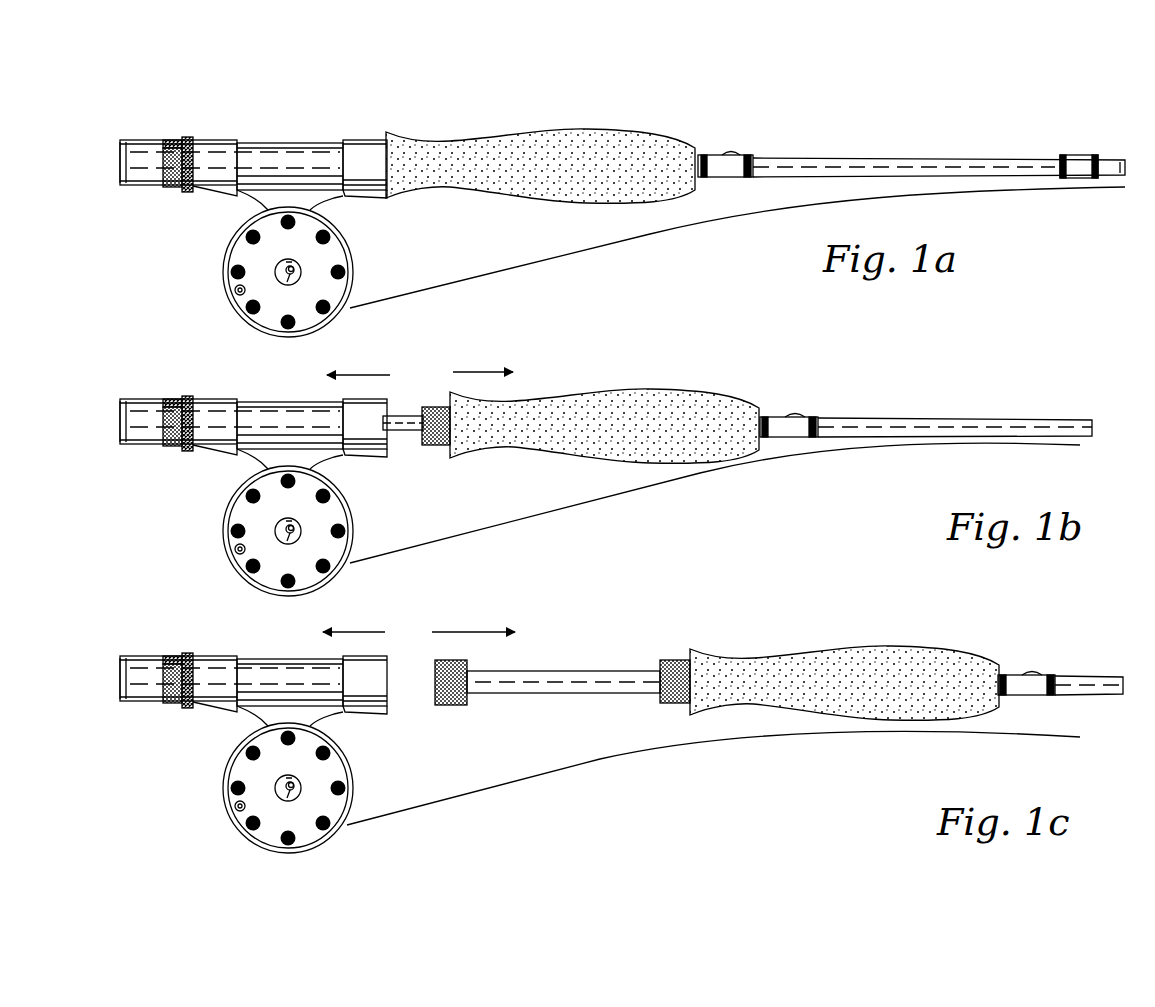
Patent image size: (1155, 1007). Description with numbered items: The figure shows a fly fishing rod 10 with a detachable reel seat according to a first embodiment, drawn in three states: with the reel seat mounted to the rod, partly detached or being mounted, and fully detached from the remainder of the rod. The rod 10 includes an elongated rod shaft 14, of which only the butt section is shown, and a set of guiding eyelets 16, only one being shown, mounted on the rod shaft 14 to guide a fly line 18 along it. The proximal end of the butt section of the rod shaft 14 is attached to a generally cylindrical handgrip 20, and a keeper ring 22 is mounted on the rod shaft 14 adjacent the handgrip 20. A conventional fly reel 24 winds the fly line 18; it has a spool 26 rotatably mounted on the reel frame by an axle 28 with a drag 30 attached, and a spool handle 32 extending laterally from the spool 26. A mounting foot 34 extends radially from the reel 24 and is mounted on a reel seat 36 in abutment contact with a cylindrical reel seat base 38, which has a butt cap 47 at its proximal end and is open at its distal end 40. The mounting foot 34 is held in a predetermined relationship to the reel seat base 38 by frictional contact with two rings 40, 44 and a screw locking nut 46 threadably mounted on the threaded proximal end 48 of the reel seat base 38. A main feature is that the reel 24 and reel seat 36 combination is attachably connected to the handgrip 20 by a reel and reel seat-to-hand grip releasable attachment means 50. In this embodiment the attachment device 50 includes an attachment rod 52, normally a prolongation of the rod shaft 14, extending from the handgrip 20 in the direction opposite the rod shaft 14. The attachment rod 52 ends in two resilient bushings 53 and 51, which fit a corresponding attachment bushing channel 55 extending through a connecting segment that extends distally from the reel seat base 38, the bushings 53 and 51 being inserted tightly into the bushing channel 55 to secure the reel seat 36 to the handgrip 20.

In FIG. 1A, the fly fishing rod 10 is at (911, 139).
In FIG. 1B, the fly fishing rod 10 is at (926, 363).
In FIG. 1C, the fly fishing rod 10 is at (1049, 649).
In FIG. 1A, the rod shaft 14 is at (848, 158).
In FIG. 1B, the rod shaft 14 is at (875, 418).
In FIG. 1C, the rod shaft 14 is at (1090, 678).
In FIG. 1A, the guiding eyelets 16 is at (1080, 179).
In FIG. 1A, the fly line 18 is at (765, 213).
In FIG. 1B, the fly line 18 is at (650, 490).
In FIG. 1C, the fly line 18 is at (633, 750).
In FIG. 1A, the handgrip 20 is at (478, 148).
In FIG. 1B, the handgrip 20 is at (655, 410).
In FIG. 1C, the handgrip 20 is at (840, 668).
In FIG. 1A, the keeper ring 22 is at (725, 155).
In FIG. 1B, the keeper ring 22 is at (790, 417).
In FIG. 1C, the keeper ring 22 is at (1025, 676).
In FIG. 1A, the fly reel 24 is at (283, 277).
In FIG. 1B, the fly reel 24 is at (284, 535).
In FIG. 1C, the fly reel 24 is at (276, 801).
In FIG. 1A, the spool 26 is at (352, 292).
In FIG. 1B, the spool 26 is at (328, 531).
In FIG. 1C, the spool 26 is at (314, 794).
In FIG. 1A, the axle 28 is at (297, 268).
In FIG. 1B, the axle 28 is at (340, 502).
In FIG. 1C, the axle 28 is at (340, 759).
In FIG. 1A, the drag 30 is at (276, 272).
In FIG. 1B, the drag 30 is at (243, 527).
In FIG. 1C, the drag 30 is at (242, 785).
In FIG. 1A, the spool handle 32 is at (239, 295).
In FIG. 1B, the spool handle 32 is at (221, 574).
In FIG. 1C, the spool handle 32 is at (229, 840).
In FIG. 1A, the mounting foot 34 is at (246, 198).
In FIG. 1B, the mounting foot 34 is at (264, 471).
In FIG. 1C, the mounting foot 34 is at (264, 728).
In FIG. 1A, the reel seat 36 is at (242, 149).
In FIG. 1B, the reel seat 36 is at (268, 416).
In FIG. 1C, the reel seat 36 is at (267, 673).
In FIG. 1A, the reel seat base 38 is at (268, 143).
In FIG. 1B, the reel seat base 38 is at (280, 399).
In FIG. 1C, the reel seat base 38 is at (280, 656).
In FIG. 1A, the ring 40 is at (367, 140).
In FIG. 1B, the ring 40 is at (390, 391).
In FIG. 1C, the ring 40 is at (390, 647).
In FIG. 1A, the ring 44 is at (215, 137).
In FIG. 1B, the ring 44 is at (189, 398).
In FIG. 1C, the ring 44 is at (189, 644).
In FIG. 1A, the screw locking nut 46 is at (183, 140).
In FIG. 1B, the screw locking nut 46 is at (224, 397).
In FIG. 1C, the screw locking nut 46 is at (224, 643).
In FIG. 1A, the butt cap 47 is at (122, 187).
In FIG. 1B, the butt cap 47 is at (113, 454).
In FIG. 1C, the butt cap 47 is at (113, 711).
In FIG. 1A, the threaded proximal end 48 is at (171, 188).
In FIG. 1B, the threaded proximal end 48 is at (159, 453).
In FIG. 1C, the threaded proximal end 48 is at (159, 710).
In FIG. 1B, the reel and reel seat-to-hand grip releasable attachment means 50 is at (360, 375).
In FIG. 1C, the reel and reel seat-to-hand grip releasable attachment means 50 is at (360, 632).
In FIG. 1B, the resilient bushing 51 is at (430, 407).
In FIG. 1C, the resilient bushing 51 is at (672, 660).
In FIG. 1B, the attachment rod 52 is at (405, 438).
In FIG. 1C, the attachment rod 52 is at (572, 671).
In FIG. 1C, the resilient bushing 53 is at (450, 705).
In FIG. 1B, the attachment bushing channel 55 is at (392, 440).
In FIG. 1C, the attachment bushing channel 55 is at (392, 697).